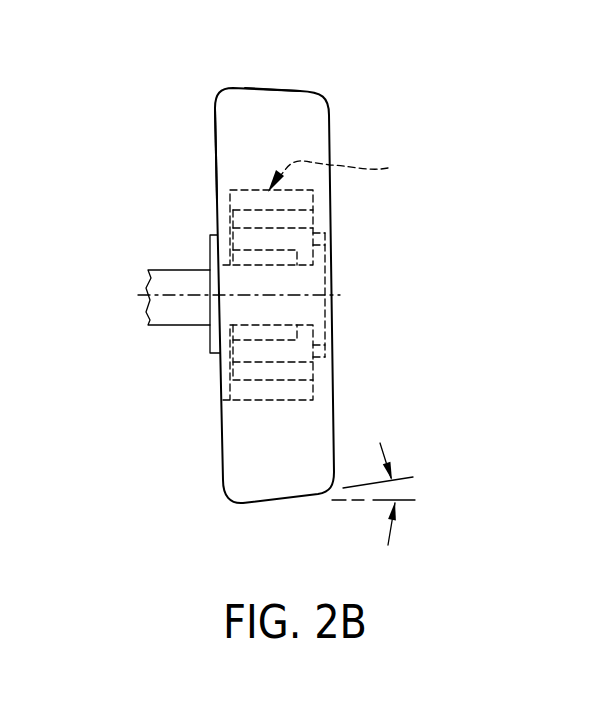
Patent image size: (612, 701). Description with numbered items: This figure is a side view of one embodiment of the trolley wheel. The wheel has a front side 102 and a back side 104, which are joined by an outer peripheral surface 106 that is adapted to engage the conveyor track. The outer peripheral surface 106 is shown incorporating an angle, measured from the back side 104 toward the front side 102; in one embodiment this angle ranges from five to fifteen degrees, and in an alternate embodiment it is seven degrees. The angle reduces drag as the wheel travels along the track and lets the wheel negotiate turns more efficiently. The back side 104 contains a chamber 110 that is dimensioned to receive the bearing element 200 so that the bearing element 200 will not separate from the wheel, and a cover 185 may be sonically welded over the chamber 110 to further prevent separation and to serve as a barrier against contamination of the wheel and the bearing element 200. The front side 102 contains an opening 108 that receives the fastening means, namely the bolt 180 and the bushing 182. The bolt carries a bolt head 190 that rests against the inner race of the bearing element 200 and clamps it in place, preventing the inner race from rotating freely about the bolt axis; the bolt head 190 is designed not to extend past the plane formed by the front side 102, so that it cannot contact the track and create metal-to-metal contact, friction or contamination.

The front side 102 is at (330, 148).
The back side 104 is at (216, 131).
The outer peripheral surface 106 is at (273, 88).
The opening 108 is at (223, 377).
The chamber 110 is at (287, 370).
The bolt 180 is at (168, 280).
The bushing 182 is at (212, 343).
The cover 185 is at (230, 211).
The bolt head 190 is at (329, 248).
The bearing element 200 is at (350, 172).